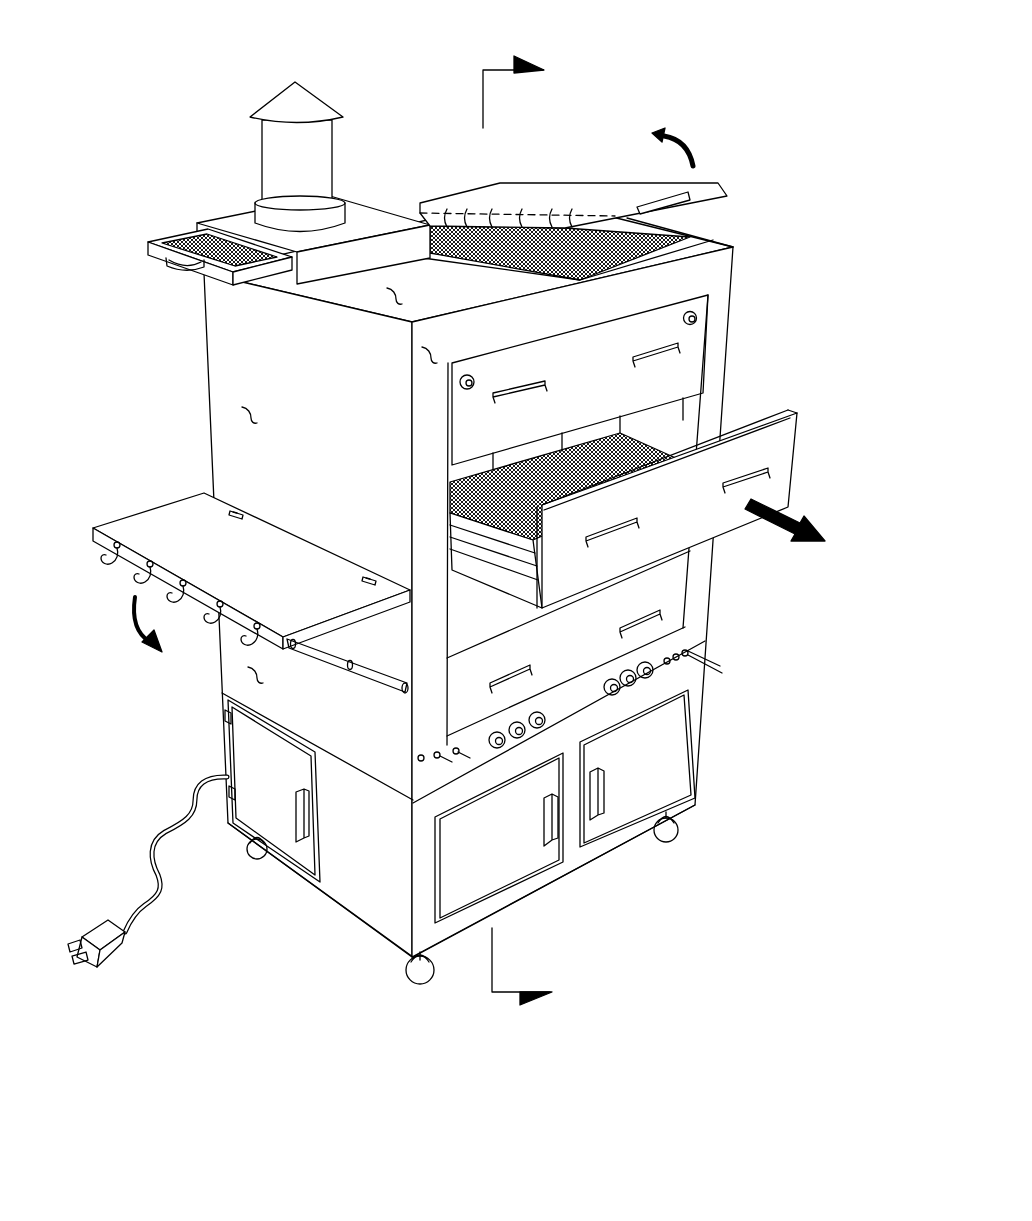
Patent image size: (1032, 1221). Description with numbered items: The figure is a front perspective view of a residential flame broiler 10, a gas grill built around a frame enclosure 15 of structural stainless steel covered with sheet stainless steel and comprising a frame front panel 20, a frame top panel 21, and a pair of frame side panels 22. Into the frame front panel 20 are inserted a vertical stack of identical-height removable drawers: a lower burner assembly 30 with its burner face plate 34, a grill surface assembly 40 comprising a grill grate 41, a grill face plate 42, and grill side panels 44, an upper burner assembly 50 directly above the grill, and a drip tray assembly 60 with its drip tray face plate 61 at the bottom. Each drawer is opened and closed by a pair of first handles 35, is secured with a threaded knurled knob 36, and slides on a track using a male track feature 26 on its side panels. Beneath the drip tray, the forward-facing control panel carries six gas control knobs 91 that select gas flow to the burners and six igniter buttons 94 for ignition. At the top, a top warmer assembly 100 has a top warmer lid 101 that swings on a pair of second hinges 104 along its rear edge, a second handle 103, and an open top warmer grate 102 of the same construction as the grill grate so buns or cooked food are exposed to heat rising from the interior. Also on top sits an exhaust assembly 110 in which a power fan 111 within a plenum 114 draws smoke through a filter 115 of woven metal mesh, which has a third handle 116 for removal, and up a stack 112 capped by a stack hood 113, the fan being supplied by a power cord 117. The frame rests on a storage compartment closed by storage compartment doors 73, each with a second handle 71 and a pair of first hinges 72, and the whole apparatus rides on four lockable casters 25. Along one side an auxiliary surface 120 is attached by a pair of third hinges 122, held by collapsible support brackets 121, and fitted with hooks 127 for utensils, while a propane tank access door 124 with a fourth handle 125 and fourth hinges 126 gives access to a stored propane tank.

The residential flame broiler 10 is at (753, 107).
The frame enclosure 15 is at (207, 462).
The frame front panel 20 is at (422, 352).
The frame top panel 21 is at (387, 290).
The frame side panels 22 is at (242, 413).
The caster 25 is at (253, 858).
The male track feature 26 is at (480, 566).
The lower burner assembly 30 is at (688, 552).
The burner face plate 34 is at (571, 343).
The first handle 35 is at (548, 390).
The threaded knurled knob 36 is at (459, 386).
The grill surface assembly 40 is at (780, 496).
The grill grate 41 is at (505, 505).
The grill face plate 42 is at (787, 448).
The grill side panel 44 is at (772, 412).
The upper burner assembly 50 is at (710, 345).
The drip tray assembly 60 is at (686, 628).
The drip tray face plate 61 is at (692, 554).
The second handle 71 is at (548, 797).
The first hinge 72 is at (433, 907).
The storage compartment doors 73 is at (547, 857).
The gas control knob 91 is at (497, 732).
The igniter button 94 is at (450, 760).
The top warmer assembly 100 is at (613, 161).
The top warmer lid 101 is at (582, 183).
The top warmer grate 102 is at (712, 237).
The second handle 103 is at (640, 210).
The second hinge 104 is at (420, 207).
The exhaust assembly 110 is at (248, 211).
The power fan 111 is at (326, 219).
The stack 112 is at (278, 167).
The stack hood 113 is at (285, 105).
The plenum 114 is at (317, 265).
The filter 115 is at (148, 250).
The third handle 116 is at (195, 273).
The power cord 117 is at (148, 892).
The auxiliary surface 120 is at (268, 603).
The support bracket 121 is at (377, 688).
The third hinge 122 is at (368, 578).
The propane tank access door 124 is at (300, 857).
The fourth handle 125 is at (290, 823).
The fourth hinge 126 is at (228, 715).
The hook 127 is at (213, 603).